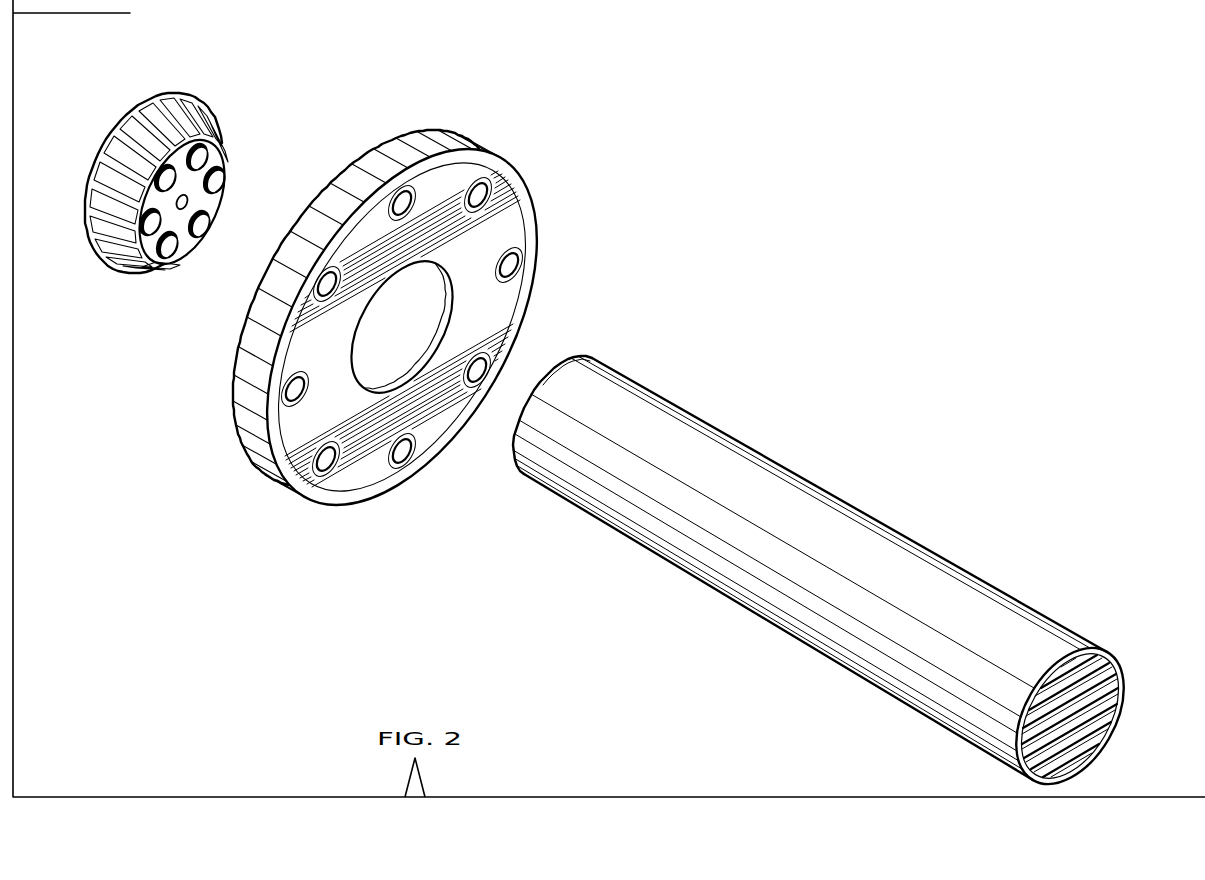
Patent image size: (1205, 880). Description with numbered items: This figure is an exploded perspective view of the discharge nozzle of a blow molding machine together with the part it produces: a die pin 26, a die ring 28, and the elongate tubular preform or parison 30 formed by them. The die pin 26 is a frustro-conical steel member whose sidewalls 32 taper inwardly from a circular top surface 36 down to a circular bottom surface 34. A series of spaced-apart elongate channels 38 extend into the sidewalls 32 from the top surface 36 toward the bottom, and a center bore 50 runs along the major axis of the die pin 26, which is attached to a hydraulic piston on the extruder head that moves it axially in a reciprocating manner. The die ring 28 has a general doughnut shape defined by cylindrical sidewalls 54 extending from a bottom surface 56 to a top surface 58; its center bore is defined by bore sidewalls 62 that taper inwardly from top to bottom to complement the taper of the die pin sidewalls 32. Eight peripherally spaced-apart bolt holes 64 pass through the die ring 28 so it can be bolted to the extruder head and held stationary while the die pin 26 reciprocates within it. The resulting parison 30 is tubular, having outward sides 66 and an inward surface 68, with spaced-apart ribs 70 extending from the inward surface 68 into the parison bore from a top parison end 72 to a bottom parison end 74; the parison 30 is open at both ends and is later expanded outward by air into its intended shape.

The die pin 26 is at (181, 157).
The die ring 28 is at (403, 317).
The parison 30 is at (851, 566).
The sidewalls 32 is at (147, 125).
The circular bottom surface 34 is at (215, 204).
The circular top surface 36 is at (107, 147).
The elongate channels 38 is at (190, 112).
The center bore 50 is at (420, 315).
The cylindrical sidewalls 54 is at (380, 150).
The bottom surface 56 is at (513, 220).
The top surface 58 is at (320, 187).
The bore sidewalls 62 is at (420, 365).
The bolt holes 64 is at (391, 465).
The outward sides 66 is at (847, 508).
The inward surface 68 is at (1115, 728).
The ribs 70 is at (1118, 688).
The top parison end 72 is at (545, 388).
The bottom parison end 74 is at (1080, 772).